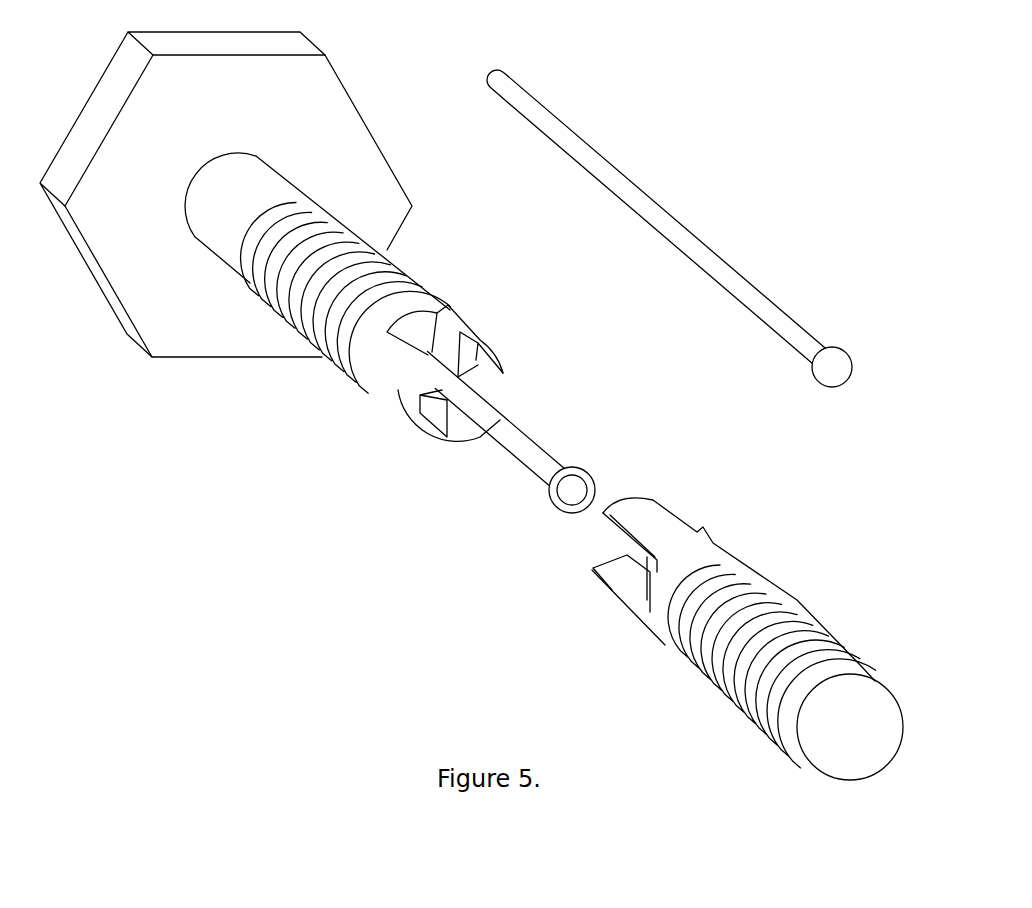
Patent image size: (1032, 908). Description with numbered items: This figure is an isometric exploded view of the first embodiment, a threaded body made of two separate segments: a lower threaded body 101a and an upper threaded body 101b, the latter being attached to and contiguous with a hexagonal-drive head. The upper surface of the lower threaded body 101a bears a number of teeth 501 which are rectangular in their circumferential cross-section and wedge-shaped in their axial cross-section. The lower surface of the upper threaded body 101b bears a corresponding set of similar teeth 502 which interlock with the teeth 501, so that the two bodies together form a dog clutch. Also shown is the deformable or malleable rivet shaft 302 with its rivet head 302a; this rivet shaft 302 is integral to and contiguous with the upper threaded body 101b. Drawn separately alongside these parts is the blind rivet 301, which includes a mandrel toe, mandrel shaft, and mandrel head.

The lower threaded body 101a is at (795, 600).
The upper threaded body 101b is at (305, 338).
The blind rivet 301 is at (672, 213).
The rivet shaft 302 is at (522, 450).
The rivet head 302a is at (590, 478).
The teeth 501 is at (613, 590).
The teeth 502 is at (483, 362).